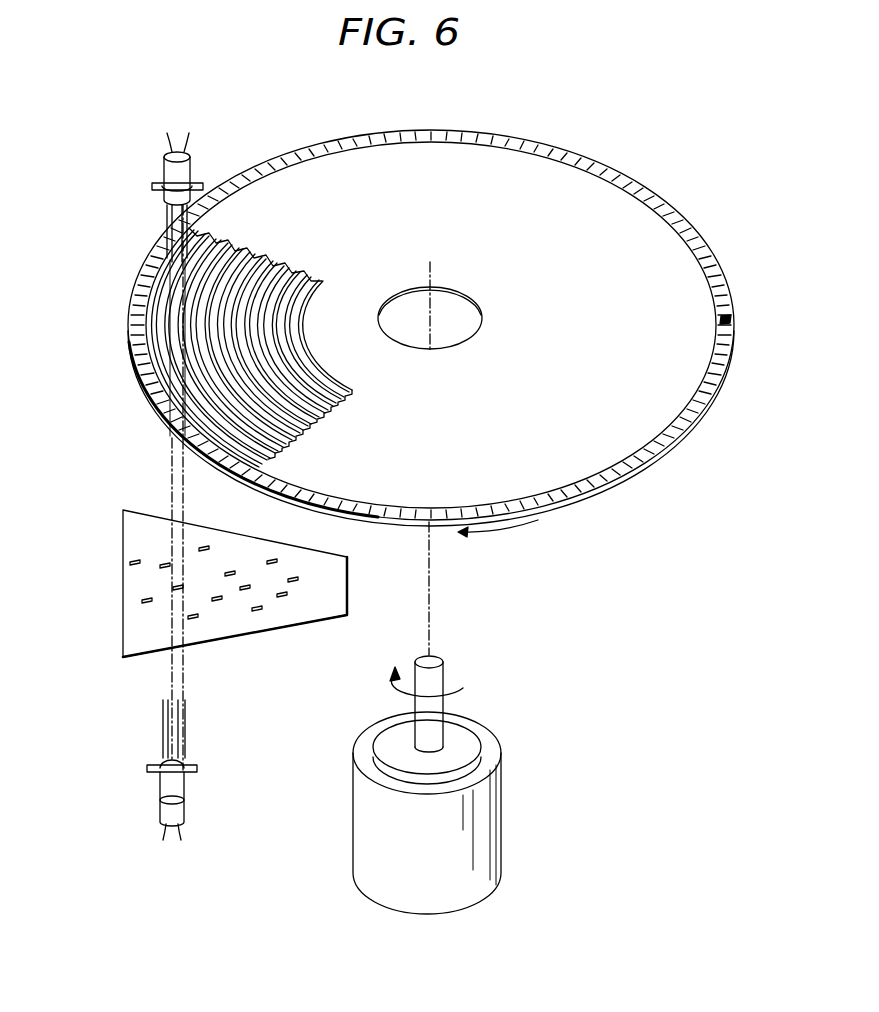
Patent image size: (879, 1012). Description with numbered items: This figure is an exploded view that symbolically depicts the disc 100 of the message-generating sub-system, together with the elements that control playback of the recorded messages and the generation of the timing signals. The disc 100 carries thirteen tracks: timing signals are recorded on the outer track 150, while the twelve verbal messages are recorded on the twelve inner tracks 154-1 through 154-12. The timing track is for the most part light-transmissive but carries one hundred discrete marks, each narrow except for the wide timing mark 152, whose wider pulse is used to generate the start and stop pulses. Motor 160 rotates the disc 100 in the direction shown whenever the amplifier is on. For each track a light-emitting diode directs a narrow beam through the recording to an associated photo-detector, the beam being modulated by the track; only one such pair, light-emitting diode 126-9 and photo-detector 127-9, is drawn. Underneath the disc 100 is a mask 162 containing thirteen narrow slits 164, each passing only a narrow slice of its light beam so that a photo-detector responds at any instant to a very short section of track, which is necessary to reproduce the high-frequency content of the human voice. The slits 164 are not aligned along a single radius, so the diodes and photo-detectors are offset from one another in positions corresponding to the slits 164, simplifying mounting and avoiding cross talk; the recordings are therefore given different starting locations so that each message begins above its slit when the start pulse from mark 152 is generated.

The disc 100 is at (566, 135).
The outer track 150 is at (653, 203).
The wide timing mark 152 is at (731, 314).
The inner track 154-1 is at (152, 322).
The inner track 154-12 is at (296, 314).
The light-emitting diode 126-9 is at (164, 170).
The photo-detector 127-9 is at (186, 803).
The motor 160 is at (498, 838).
The mask 162 is at (329, 601).
The slits 164 is at (301, 578).